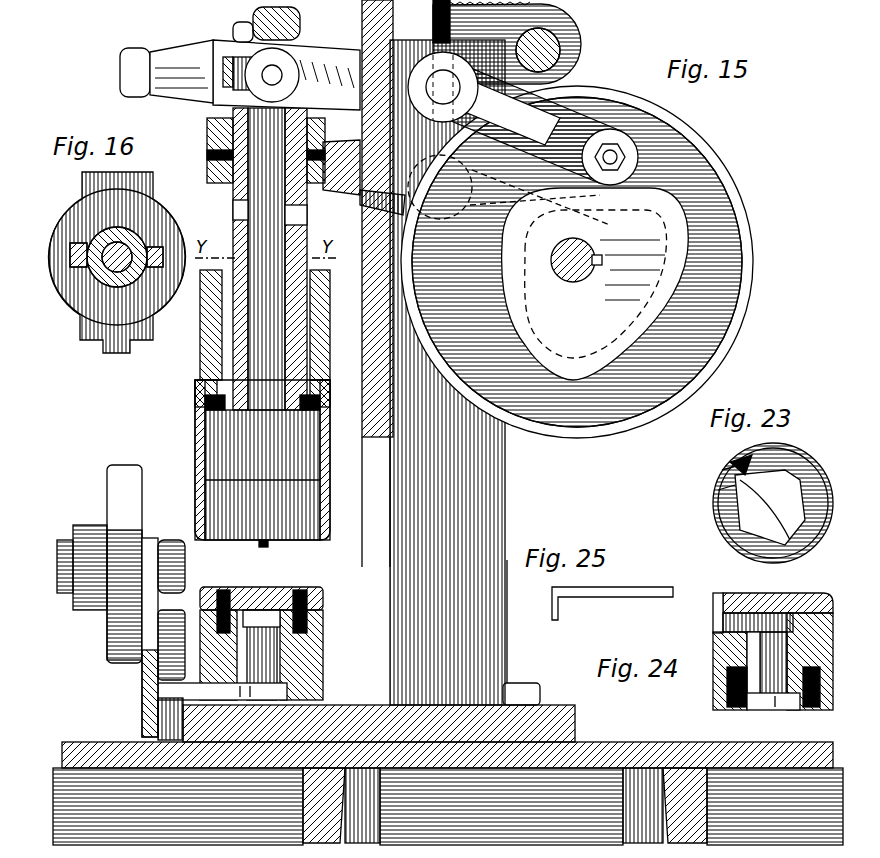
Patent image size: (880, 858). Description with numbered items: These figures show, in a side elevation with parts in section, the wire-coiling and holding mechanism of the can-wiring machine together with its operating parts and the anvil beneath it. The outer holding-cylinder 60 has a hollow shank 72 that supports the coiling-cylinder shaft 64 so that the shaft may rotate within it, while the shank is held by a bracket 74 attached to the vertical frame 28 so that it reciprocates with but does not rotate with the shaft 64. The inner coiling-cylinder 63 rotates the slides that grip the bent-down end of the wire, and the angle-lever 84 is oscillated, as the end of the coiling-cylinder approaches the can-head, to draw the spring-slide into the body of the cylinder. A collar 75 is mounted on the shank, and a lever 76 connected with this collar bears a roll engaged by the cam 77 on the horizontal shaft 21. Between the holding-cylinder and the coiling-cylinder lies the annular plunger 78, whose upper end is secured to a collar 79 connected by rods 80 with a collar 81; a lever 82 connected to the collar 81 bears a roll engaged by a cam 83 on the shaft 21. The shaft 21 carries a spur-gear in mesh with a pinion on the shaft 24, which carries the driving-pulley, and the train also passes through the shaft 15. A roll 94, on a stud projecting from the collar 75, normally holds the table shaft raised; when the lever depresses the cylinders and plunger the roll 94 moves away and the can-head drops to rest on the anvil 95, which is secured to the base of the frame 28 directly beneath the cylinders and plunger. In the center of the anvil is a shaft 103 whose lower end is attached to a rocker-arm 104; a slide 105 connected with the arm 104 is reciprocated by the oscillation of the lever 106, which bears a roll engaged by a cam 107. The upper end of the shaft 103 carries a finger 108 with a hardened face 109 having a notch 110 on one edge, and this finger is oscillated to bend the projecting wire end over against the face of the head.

In FIG. 15, the shaft 15 is at (166, 540).
In FIG. 15, the horizontal shaft 21 is at (600, 262).
In FIG. 15, the shaft 24 is at (583, 30).
In FIG. 15, the vertical frame 28 is at (386, 428).
In FIG. 15, the outer holding-cylinder 60 is at (197, 397).
In FIG. 16, the outer holding-cylinder 60 is at (115, 350).
In FIG. 15, the inner coiling-cylinder 63 is at (240, 541).
In FIG. 15, the coiling-cylinder shaft 64 is at (240, 372).
In FIG. 16, the coiling-cylinder shaft 64 is at (85, 312).
In FIG. 15, the hollow shank 72 is at (260, 330).
In FIG. 16, the hollow shank 72 is at (145, 232).
In FIG. 15, the bracket 74 is at (200, 352).
In FIG. 15, the collar 75 is at (215, 45).
In FIG. 15, the lever 76 is at (595, 92).
In FIG. 15, the cam 77 is at (640, 157).
In FIG. 15, the annular plunger 78 is at (195, 435).
In FIG. 15, the collar 79 is at (205, 404).
In FIG. 15, the rods 80 is at (233, 210).
In FIG. 16, the rods 80 is at (115, 258).
In FIG. 15, the collar 81 is at (207, 127).
In FIG. 15, the lever 82 is at (404, 222).
In FIG. 15, the cam 83 is at (578, 437).
In FIG. 15, the angle-lever 84 is at (266, 546).
In FIG. 15, the roll 94 is at (125, 95).
In FIG. 15, the anvil 95 is at (325, 592).
In FIG. 23, the anvil 95 is at (805, 472).
In FIG. 24, the anvil 95 is at (800, 594).
In FIG. 15, the shaft 103 is at (325, 676).
In FIG. 23, the shaft 103 is at (715, 512).
In FIG. 24, the shaft 103 is at (713, 692).
In FIG. 15, the rocker-arm 104 is at (153, 690).
In FIG. 24, the rocker-arm 104 is at (773, 712).
In FIG. 15, the slide 105 is at (448, 793).
In FIG. 15, the lever 106 is at (110, 664).
In FIG. 15, the cam 107 is at (115, 508).
In FIG. 15, the finger 108 is at (310, 598).
In FIG. 23, the finger 108 is at (735, 460).
In FIG. 24, the finger 108 is at (722, 628).
In FIG. 23, the hardened face 109 is at (725, 470).
In FIG. 24, the hardened face 109 is at (714, 612).
In FIG. 23, the notch 110 is at (718, 490).
In FIG. 24, the notch 110 is at (718, 593).